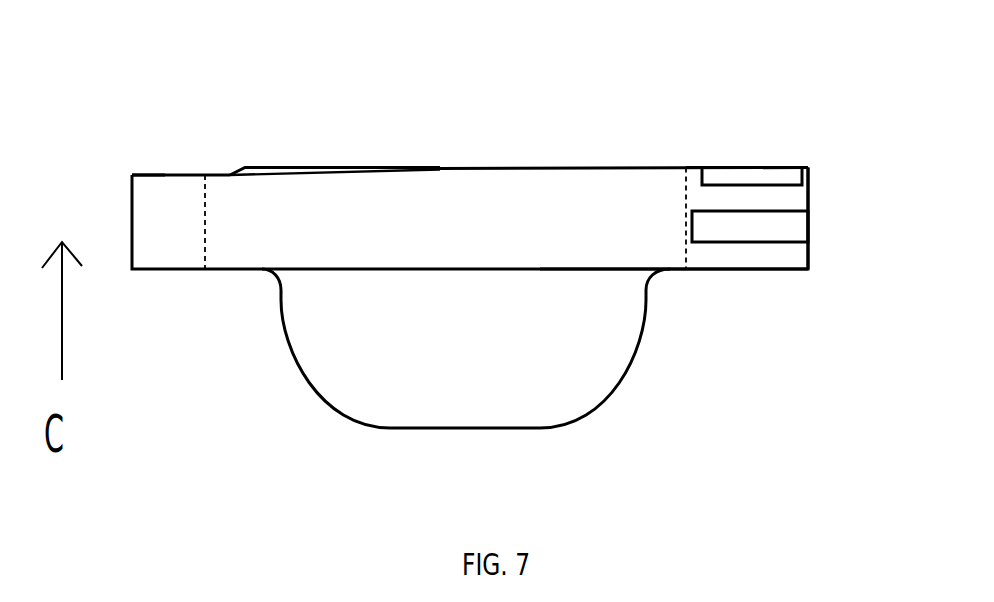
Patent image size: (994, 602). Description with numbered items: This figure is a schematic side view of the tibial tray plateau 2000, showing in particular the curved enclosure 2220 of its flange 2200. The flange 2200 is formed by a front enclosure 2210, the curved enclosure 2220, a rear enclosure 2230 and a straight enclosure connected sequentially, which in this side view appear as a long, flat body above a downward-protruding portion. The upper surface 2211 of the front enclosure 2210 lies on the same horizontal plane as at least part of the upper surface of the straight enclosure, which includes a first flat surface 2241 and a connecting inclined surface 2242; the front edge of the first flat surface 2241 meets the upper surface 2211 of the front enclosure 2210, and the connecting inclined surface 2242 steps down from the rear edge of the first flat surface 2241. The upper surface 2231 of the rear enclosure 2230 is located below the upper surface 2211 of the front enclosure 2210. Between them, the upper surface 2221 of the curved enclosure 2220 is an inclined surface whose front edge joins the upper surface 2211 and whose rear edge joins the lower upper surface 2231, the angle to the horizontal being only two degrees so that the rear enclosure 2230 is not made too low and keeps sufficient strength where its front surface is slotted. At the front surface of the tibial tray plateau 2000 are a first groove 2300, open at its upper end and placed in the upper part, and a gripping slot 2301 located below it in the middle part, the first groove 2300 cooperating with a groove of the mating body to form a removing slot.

The tibial tray plateau 2000 is at (431, 348).
The flange 2200 is at (674, 326).
The front enclosure 2210 is at (793, 219).
The upper surface of the front enclosure 2211 is at (780, 93).
The curved enclosure 2220 is at (470, 175).
The upper surface of the curved enclosure 2221 is at (264, 256).
The rear enclosure 2230 is at (129, 185).
The upper surface of the rear enclosure 2231 is at (112, 130).
The first flat surface 2241 is at (342, 112).
The connecting inclined surface 2242 is at (190, 119).
The first groove 2300 is at (801, 134).
The gripping slot 2301 is at (802, 256).